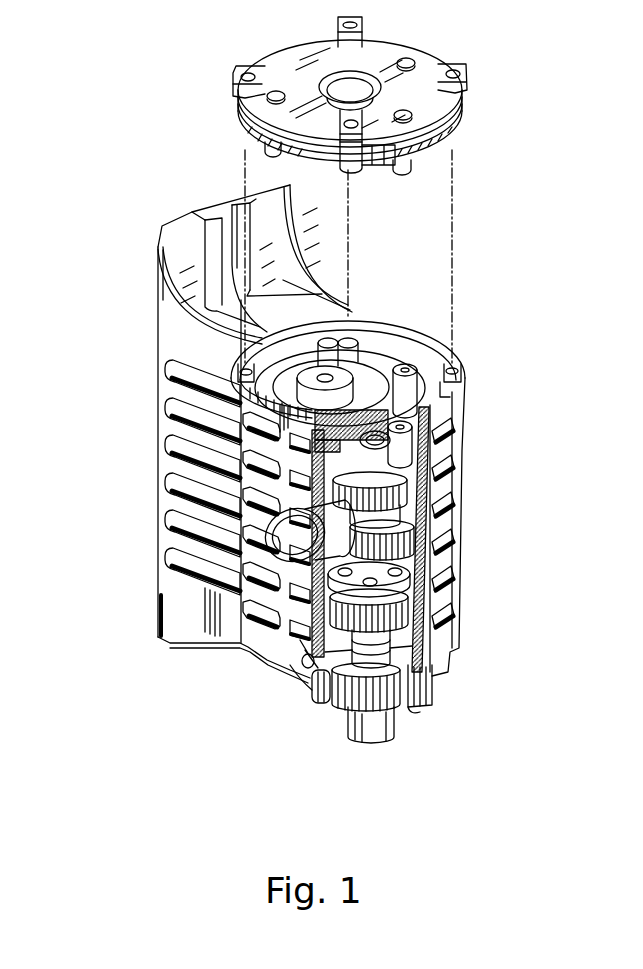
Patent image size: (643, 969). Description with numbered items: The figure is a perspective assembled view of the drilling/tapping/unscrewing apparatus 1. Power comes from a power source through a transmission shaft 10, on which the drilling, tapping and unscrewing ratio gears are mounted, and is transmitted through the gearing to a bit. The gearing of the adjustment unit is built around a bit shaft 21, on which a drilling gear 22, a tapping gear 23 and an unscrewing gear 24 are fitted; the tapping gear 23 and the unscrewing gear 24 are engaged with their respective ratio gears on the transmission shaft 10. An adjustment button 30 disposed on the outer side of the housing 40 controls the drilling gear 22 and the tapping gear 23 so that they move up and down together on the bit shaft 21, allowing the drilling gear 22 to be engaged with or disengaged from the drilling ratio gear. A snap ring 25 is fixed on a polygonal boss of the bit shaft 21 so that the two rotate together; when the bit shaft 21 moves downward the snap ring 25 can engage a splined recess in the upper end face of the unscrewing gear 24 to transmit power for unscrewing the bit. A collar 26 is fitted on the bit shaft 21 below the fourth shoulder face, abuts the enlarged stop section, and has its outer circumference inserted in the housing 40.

The apparatus 1 is at (505, 378).
The transmission shaft 10 is at (350, 318).
The bit shaft 21 is at (355, 735).
The drilling gear 22 is at (427, 500).
The tapping gear 23 is at (422, 543).
The unscrewing gear 24 is at (313, 697).
The snap ring 25 is at (312, 596).
The collar 26 is at (434, 693).
The adjustment button 30 is at (310, 503).
The housing 40 is at (270, 647).